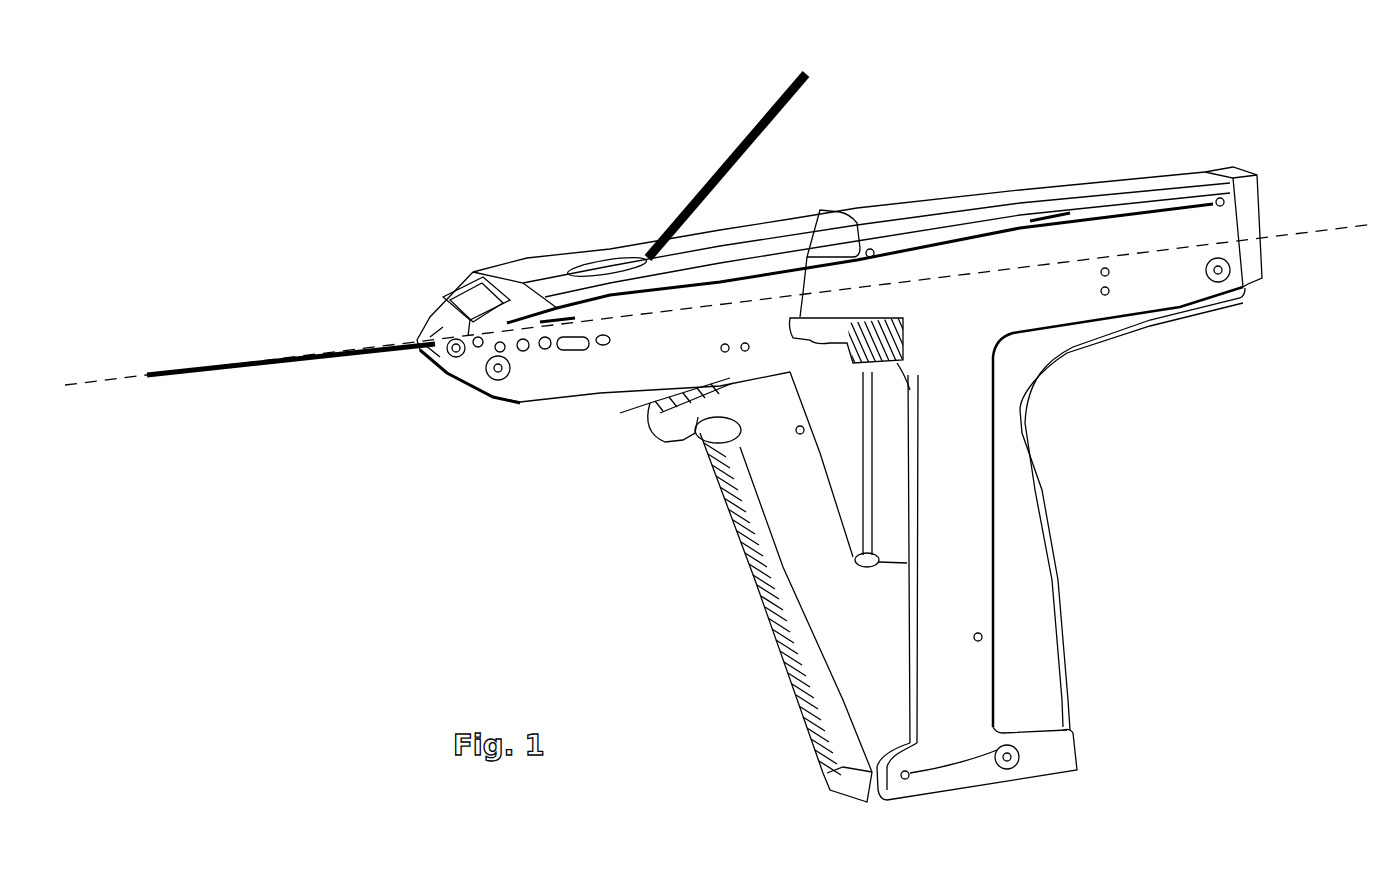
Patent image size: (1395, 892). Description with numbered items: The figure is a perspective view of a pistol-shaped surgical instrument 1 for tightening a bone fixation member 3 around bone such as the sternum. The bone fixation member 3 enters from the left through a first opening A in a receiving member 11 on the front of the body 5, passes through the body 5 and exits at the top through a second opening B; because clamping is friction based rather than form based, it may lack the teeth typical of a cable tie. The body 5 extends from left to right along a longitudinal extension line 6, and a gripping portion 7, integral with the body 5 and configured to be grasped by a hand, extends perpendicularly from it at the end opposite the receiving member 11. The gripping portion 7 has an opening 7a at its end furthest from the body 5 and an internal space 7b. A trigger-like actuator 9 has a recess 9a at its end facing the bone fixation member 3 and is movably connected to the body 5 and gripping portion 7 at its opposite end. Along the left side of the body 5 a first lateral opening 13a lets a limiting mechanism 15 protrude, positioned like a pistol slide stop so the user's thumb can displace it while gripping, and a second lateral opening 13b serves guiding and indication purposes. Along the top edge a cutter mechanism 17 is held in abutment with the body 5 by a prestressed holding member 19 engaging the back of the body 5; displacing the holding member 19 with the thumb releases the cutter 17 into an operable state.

The surgical instrument 1 is at (236, 163).
The bone fixation member 3 is at (280, 353).
The body 5 is at (1158, 297).
The longitudinal extension line 6 is at (1317, 228).
The gripping portion 7 is at (1062, 583).
The opening 7a is at (1000, 728).
The internal space 7b is at (900, 507).
The actuator 9 is at (803, 718).
The recess 9a is at (650, 408).
The receiving member 11 is at (428, 332).
The first lateral opening 13a is at (854, 208).
The second lateral opening 13b is at (557, 327).
The limiting mechanism 15 is at (888, 316).
The cutter mechanism 17 is at (1028, 188).
The holding member 19 is at (1230, 165).
The first opening A is at (407, 340).
The second opening B is at (615, 258).